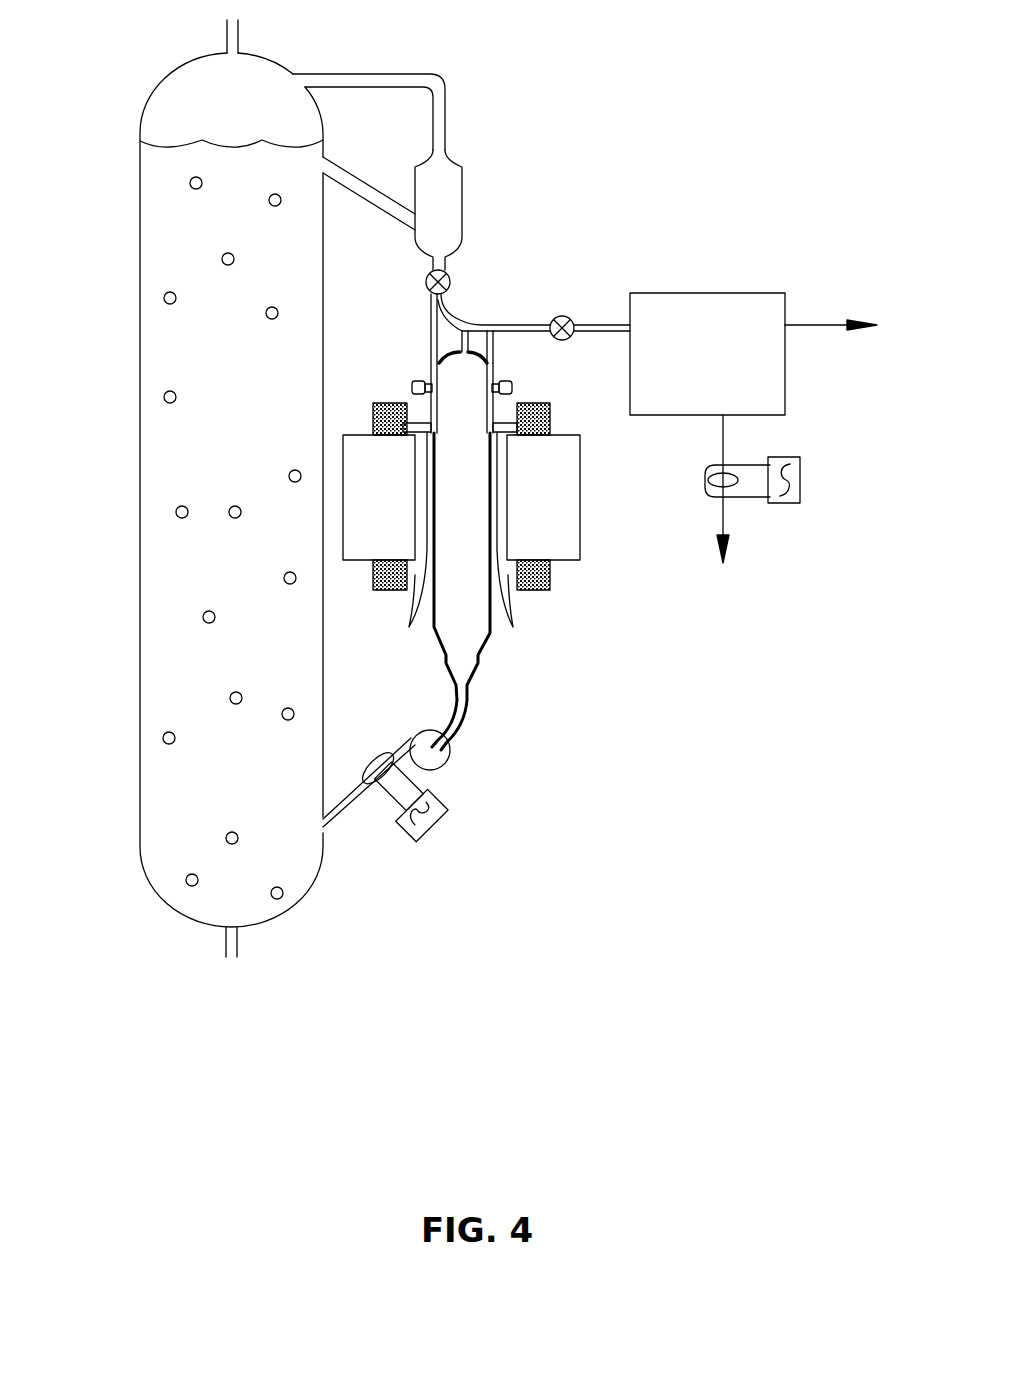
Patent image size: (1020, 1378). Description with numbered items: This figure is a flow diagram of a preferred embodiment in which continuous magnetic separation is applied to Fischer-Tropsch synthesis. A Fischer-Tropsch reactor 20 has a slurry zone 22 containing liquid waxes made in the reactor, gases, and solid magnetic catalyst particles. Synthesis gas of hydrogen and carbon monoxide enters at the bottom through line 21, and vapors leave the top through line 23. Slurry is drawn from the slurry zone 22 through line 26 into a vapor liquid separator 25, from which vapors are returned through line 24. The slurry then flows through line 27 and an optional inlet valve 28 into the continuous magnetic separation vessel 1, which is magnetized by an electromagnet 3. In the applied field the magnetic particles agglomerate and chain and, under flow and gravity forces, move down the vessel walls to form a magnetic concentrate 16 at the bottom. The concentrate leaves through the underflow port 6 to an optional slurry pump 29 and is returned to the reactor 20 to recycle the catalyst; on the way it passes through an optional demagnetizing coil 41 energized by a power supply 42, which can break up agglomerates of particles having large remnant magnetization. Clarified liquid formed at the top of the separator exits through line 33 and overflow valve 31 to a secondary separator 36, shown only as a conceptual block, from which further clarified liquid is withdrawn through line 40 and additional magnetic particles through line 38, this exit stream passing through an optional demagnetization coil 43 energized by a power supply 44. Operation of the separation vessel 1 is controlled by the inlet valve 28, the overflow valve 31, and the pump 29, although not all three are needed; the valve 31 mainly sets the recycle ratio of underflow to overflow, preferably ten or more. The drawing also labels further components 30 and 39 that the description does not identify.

The continuous magnetic separation vessel 1 is at (493, 633).
The electromagnet 3 is at (590, 527).
The underflow port 6 is at (465, 725).
The magnetic concentrate 16 is at (445, 640).
The Fischer-Tropsch reactor 20 is at (137, 392).
The synthesis gas inlet line 21 is at (248, 942).
The slurry zone 22 is at (178, 558).
The vapor removal line 23 is at (245, 30).
The vapor return line 24 is at (452, 86).
The vapor liquid separator 25 is at (468, 193).
The slurry draw line 26 is at (357, 160).
The slurry line 27 is at (428, 267).
The inlet valve 28 is at (456, 276).
The slurry pump 29 is at (453, 762).
The connecting tubes 30 is at (428, 340).
The overflow valve 31 is at (573, 310).
The clarified liquid exit line 33 is at (512, 322).
The secondary separator 36 is at (702, 304).
The magnetic particle withdrawal line 38 is at (723, 509).
The reaction zone 39 is at (457, 410).
The clarified liquid withdrawal line 40 is at (852, 325).
The demagnetizing coil 41 is at (375, 793).
The power supply 42 is at (440, 827).
The demagnetization coil 43 is at (700, 483).
The power supply 44 is at (807, 473).